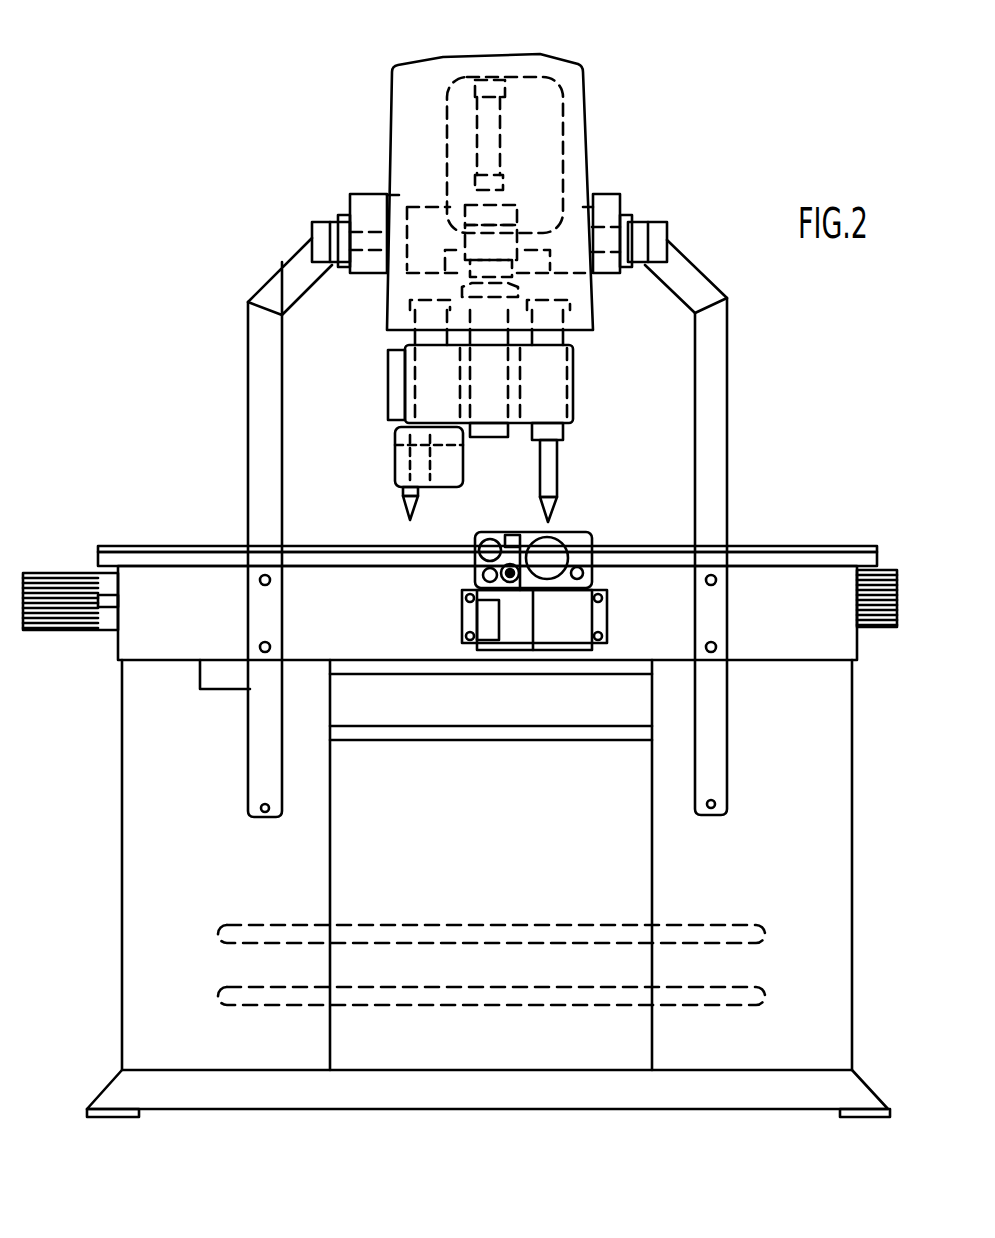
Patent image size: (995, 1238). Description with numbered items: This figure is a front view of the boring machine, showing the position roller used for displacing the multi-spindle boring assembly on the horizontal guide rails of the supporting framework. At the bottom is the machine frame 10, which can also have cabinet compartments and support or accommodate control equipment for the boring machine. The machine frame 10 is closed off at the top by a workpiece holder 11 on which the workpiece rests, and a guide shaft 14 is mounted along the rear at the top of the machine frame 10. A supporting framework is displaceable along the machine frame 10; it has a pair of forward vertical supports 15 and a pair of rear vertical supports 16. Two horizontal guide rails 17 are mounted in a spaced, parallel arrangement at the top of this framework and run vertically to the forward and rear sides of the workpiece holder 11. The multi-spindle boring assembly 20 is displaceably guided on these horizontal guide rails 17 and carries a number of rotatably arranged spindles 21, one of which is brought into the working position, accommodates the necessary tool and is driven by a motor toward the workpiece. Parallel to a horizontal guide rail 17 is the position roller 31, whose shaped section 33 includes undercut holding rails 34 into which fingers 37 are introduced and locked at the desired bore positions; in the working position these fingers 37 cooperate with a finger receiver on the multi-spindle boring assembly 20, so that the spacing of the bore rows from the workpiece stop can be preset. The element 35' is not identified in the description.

The machine frame 10 is at (828, 858).
The workpiece holder 11 is at (770, 556).
The guide shaft 14 is at (830, 545).
The forward vertical supports 15 is at (559, 638).
The rear vertical supports 16 is at (505, 576).
The horizontal guide rails 17 is at (583, 537).
The multi-spindle boring assembly 20 is at (873, 612).
The spindles 21 is at (108, 633).
The position roller 31 is at (321, 232).
The shaped section 33 is at (252, 473).
The holding rails 34 is at (503, 118).
The tool holder unit 35' is at (482, 426).
The fingers 37 is at (583, 108).